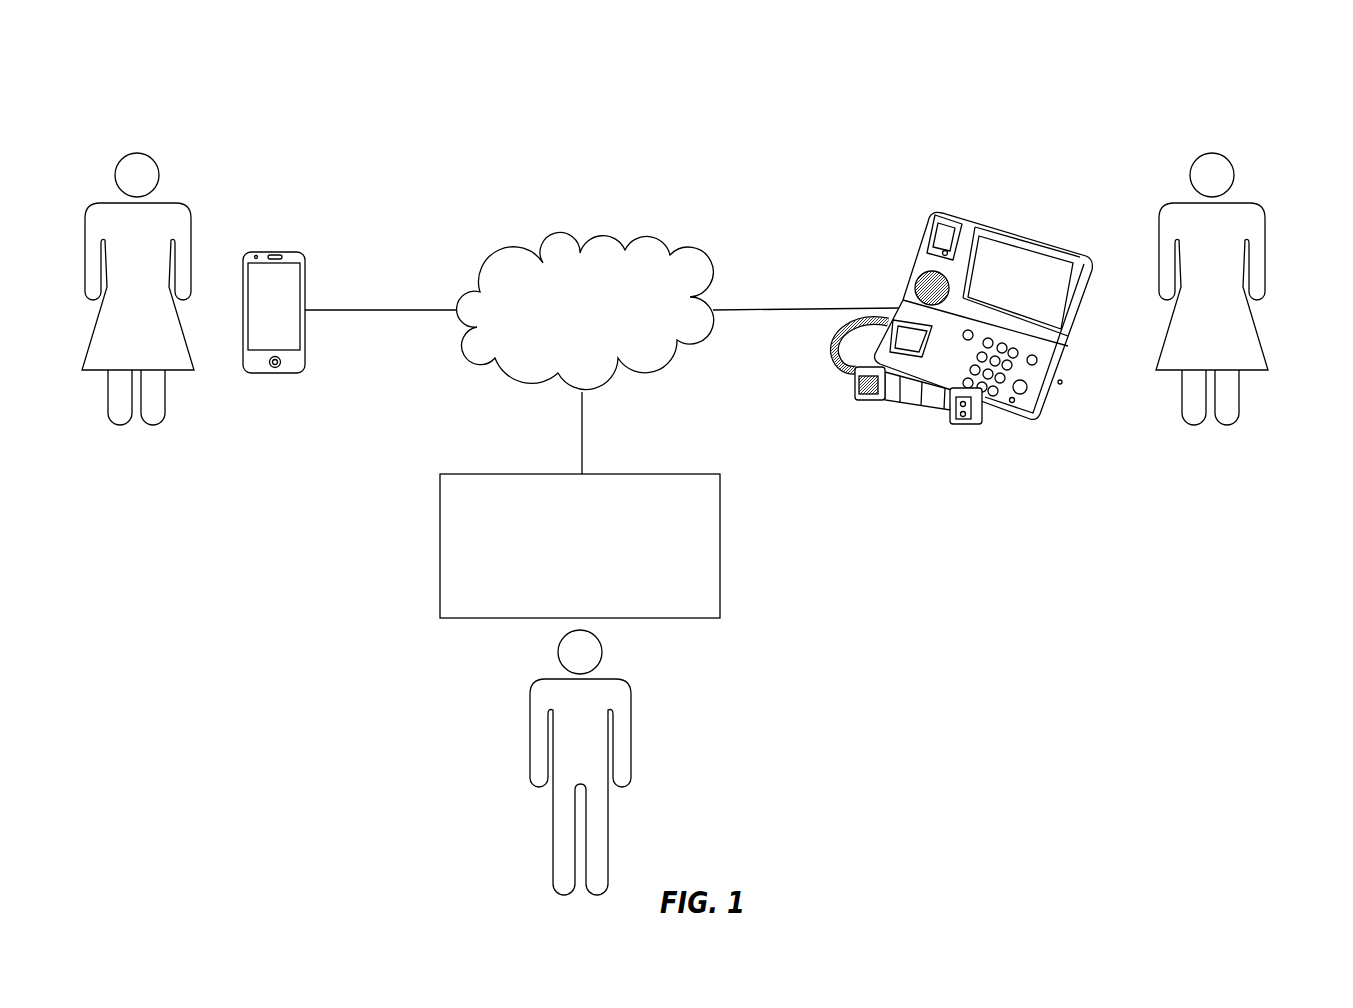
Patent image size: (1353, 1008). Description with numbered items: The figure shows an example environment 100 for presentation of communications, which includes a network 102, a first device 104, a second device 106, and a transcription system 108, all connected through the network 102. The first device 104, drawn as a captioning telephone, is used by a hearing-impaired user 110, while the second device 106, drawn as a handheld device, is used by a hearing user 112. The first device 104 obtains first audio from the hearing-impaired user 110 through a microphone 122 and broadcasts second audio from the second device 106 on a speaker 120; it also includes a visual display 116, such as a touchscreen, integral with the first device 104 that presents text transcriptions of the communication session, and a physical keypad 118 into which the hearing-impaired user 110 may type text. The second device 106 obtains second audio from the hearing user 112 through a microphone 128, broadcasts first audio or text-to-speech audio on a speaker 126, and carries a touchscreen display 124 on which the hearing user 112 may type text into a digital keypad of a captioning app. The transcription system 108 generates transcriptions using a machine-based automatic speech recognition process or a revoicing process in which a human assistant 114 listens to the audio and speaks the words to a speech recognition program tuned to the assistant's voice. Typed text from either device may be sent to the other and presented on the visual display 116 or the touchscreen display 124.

The environment 100 is at (1078, 50).
The network 102 is at (596, 336).
The first device 104 is at (963, 317).
The second device 106 is at (290, 313).
The transcription system 108 is at (565, 569).
The hearing-impaired user 110 is at (1230, 162).
The hearing user 112 is at (157, 162).
The human assistant 114 is at (530, 741).
The visual display 116 is at (1000, 257).
The physical keypad 118 is at (1017, 333).
The speaker 120 is at (963, 423).
The microphone 122 is at (867, 403).
The touchscreen display 124 is at (296, 297).
The speaker 126 is at (280, 256).
The microphone 128 is at (268, 373).